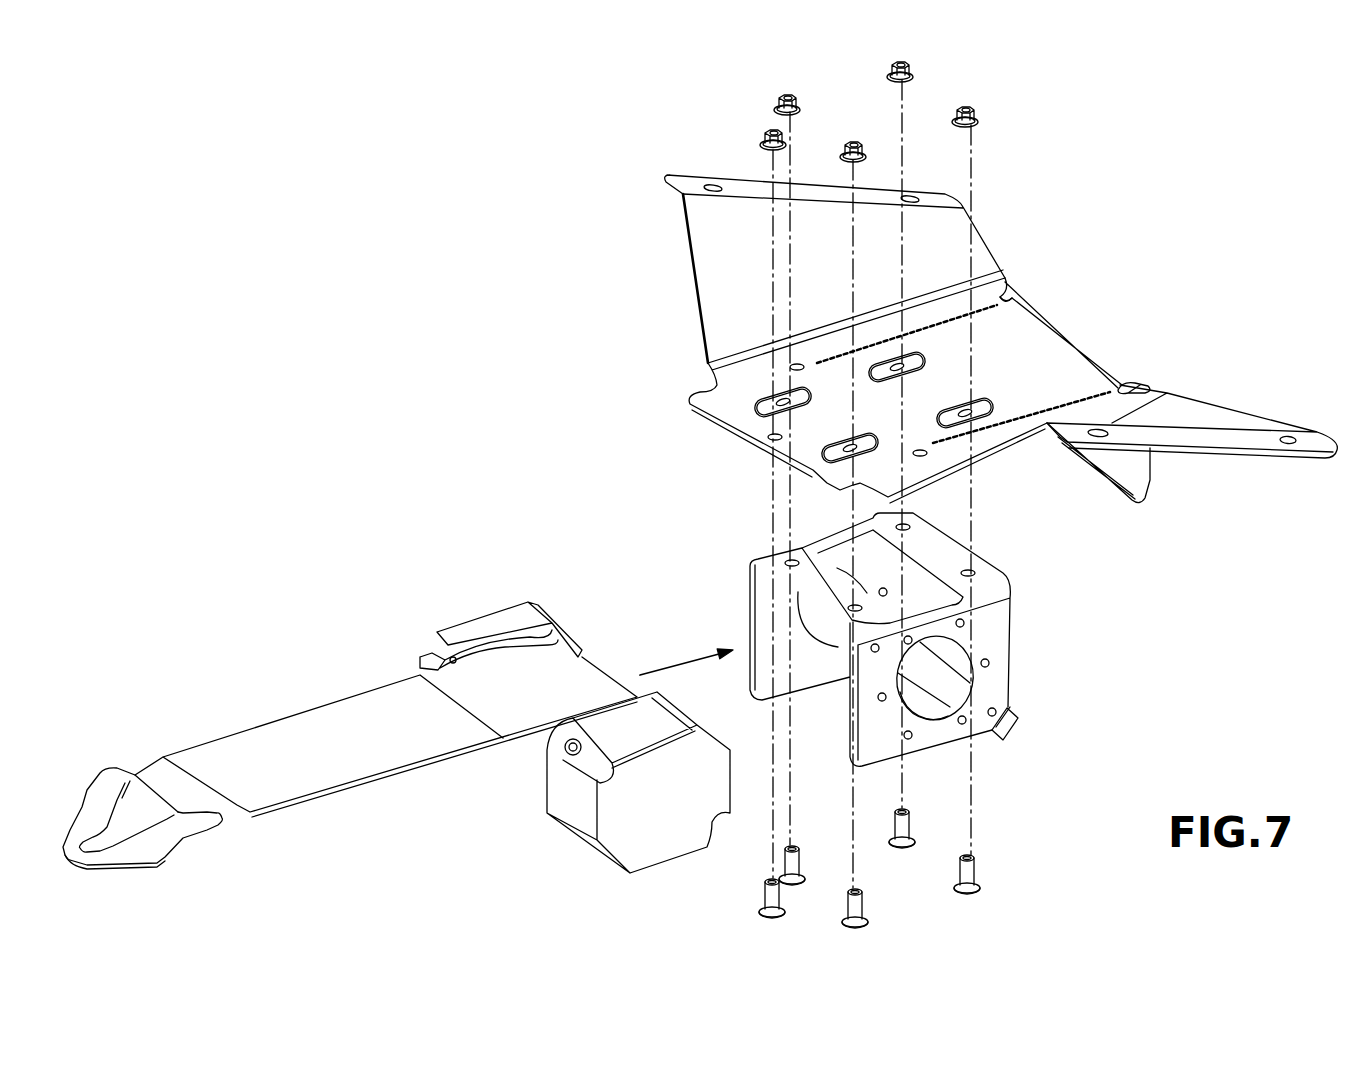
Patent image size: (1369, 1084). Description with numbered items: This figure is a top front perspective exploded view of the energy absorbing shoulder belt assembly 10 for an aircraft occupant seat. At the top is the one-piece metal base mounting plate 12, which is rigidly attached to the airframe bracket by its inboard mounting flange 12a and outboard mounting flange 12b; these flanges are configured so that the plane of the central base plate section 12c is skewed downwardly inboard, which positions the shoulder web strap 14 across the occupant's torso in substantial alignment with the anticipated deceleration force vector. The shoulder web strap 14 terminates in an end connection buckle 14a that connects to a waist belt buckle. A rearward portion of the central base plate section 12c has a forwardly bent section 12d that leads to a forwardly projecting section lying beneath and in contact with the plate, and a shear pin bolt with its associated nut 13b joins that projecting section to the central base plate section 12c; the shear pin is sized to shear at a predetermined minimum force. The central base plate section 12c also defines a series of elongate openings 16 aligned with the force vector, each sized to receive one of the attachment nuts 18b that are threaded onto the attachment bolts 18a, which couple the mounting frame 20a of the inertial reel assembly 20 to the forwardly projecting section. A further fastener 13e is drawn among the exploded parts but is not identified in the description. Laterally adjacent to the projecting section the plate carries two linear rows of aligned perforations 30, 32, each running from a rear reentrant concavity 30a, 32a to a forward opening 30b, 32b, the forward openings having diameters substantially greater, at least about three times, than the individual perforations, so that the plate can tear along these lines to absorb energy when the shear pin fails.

The energy absorbing shoulder belt assembly 10 is at (452, 453).
The base mounting plate 12 is at (677, 343).
The inboard mounting flange 12a is at (1222, 420).
The outboard mounting flange 12b is at (709, 250).
The central base plate section 12c is at (1056, 381).
The forwardly bent section 12d is at (1147, 467).
The nut 13b is at (762, 140).
The bolt 13e is at (768, 912).
The shoulder web strap 14 is at (356, 741).
The end connection buckle 14a is at (180, 845).
The elongate openings 16 is at (755, 405).
The attachment bolts 18a is at (847, 923).
The attachment nuts 18b is at (830, 74).
The inertial reel assembly 20 is at (518, 772).
The mounting frame 20a is at (1000, 627).
The aligned perforations 30 is at (1085, 388).
The rear reentrant concavity 30a is at (1136, 382).
The forward opening 30b is at (925, 453).
The aligned perforations 32 is at (936, 320).
The rear reentrant concavity 32a is at (1012, 296).
The forward opening 32b is at (800, 362).